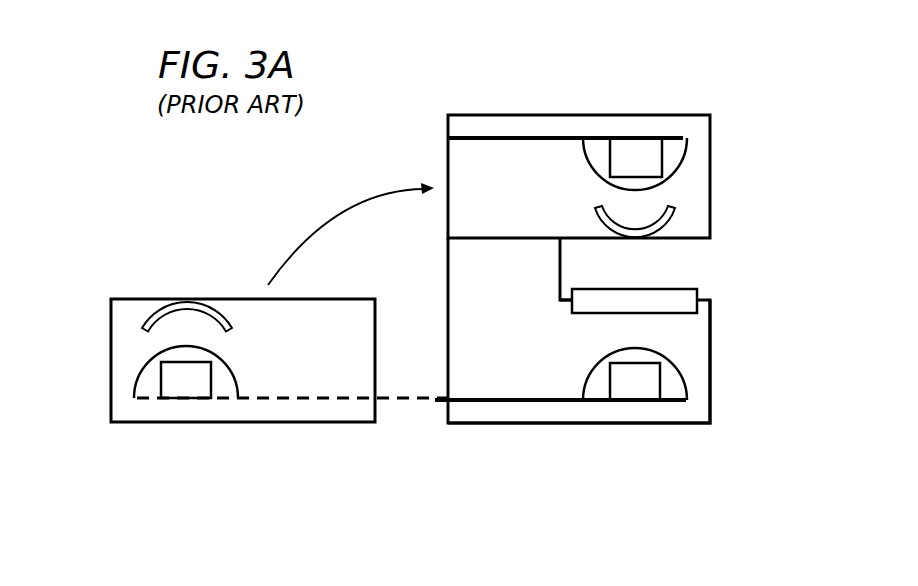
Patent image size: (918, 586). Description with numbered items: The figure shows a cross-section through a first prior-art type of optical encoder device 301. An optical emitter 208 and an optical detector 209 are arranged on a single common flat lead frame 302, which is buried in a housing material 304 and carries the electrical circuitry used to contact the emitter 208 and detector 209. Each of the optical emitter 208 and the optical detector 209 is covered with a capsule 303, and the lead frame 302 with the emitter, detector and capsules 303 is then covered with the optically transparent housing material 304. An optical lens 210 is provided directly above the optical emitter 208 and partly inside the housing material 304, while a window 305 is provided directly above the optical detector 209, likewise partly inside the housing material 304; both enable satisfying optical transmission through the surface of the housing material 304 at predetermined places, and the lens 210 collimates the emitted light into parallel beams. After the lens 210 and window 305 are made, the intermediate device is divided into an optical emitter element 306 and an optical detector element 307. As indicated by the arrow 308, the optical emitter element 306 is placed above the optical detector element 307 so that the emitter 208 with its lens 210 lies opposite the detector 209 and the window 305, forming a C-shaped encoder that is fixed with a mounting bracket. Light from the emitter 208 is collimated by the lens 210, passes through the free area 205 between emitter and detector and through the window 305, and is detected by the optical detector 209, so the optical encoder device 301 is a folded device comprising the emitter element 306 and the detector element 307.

The optical encoder device 301 is at (730, 66).
The optical emitter 208 is at (641, 152).
The optical detector 209 is at (641, 388).
The optical lens 210 is at (148, 312).
The free area 205 is at (708, 267).
The lead frame 302 is at (485, 396).
The capsule 303 is at (583, 152).
The housing material 304 is at (463, 163).
The window 305 is at (583, 317).
The optical emitter element 306 is at (722, 157).
The optical detector element 307 is at (724, 381).
The arrow 308 is at (337, 210).